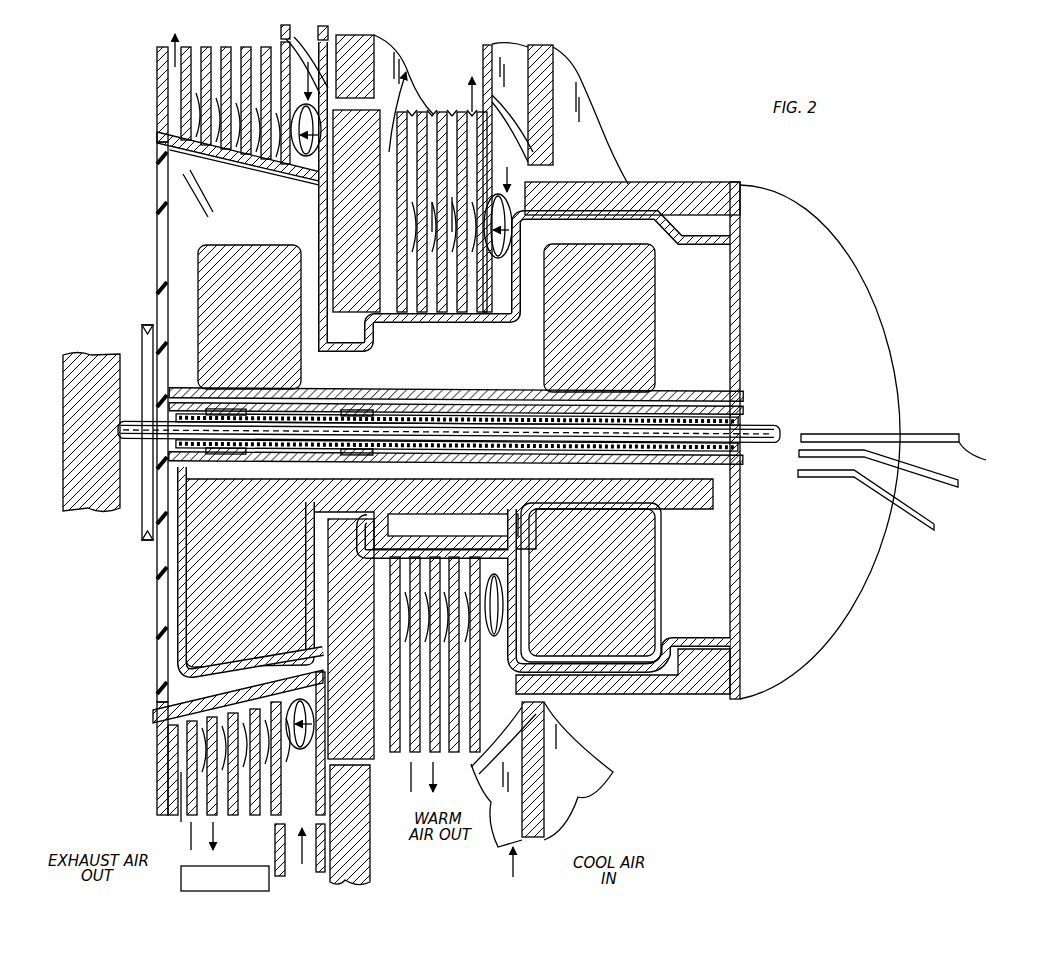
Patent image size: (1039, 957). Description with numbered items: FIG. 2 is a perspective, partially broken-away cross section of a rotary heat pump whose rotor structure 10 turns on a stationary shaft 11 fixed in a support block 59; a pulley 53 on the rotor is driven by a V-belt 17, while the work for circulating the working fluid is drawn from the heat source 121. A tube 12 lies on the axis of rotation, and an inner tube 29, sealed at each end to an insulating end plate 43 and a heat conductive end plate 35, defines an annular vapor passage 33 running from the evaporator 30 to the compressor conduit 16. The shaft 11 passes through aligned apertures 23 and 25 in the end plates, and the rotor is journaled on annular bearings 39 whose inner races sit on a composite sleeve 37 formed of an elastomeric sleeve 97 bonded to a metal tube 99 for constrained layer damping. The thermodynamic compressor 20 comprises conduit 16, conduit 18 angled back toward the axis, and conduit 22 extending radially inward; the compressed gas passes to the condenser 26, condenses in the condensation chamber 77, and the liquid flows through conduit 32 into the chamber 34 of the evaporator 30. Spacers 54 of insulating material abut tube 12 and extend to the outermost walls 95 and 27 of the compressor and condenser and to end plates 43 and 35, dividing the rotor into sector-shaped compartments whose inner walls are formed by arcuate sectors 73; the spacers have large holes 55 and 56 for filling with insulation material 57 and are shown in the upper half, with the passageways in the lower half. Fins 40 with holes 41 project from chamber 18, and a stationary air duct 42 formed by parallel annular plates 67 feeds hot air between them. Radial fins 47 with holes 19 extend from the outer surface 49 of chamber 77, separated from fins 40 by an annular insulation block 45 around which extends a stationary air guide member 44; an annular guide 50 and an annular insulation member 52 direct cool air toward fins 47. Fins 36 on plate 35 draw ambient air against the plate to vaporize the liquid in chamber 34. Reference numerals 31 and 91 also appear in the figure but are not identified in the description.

The rotor structure 10 is at (872, 212).
The shaft 11 is at (784, 426).
The tube 12 is at (323, 394).
The conduit 16 is at (157, 602).
The V-belt 17 is at (158, 316).
The conduit 18 is at (180, 696).
The holes 19 is at (503, 638).
The thermodynamic compressor 20 is at (155, 656).
The conduit 22 is at (315, 584).
The aperture 23 is at (190, 402).
The aperture 25 is at (750, 414).
The condenser 26 is at (545, 514).
The outermost wall 27 is at (401, 544).
The tube 29 is at (350, 408).
The evaporator 30 is at (647, 584).
The bottom plate 31 is at (648, 696).
The longitudinally extending conduit 32 is at (585, 694).
The annular vapor passage 33 is at (417, 394).
The evaporation chamber 34 is at (717, 606).
The end plate 35 is at (745, 701).
The fins 36 is at (967, 452).
The composite sleeve 37 is at (775, 424).
The annular bearings 39 is at (743, 456).
The fins 40 is at (263, 812).
The holes 41 is at (299, 744).
The stationary air duct 42 is at (267, 466).
The insulating end plate 43 is at (168, 212).
The stationary air guide member 44 is at (373, 866).
The annular block of insulation material 45 is at (359, 695).
The radial fins 47 is at (432, 114).
The outer surface 49 is at (383, 581).
The annular guide 50 is at (514, 852).
The annular insulation member 52 is at (583, 796).
The pulley 53 is at (141, 338).
The spacers 54 is at (718, 276).
The holes 55 is at (657, 320).
The holes 56 is at (263, 250).
The insulation material 57 is at (643, 360).
The support block 59 is at (105, 362).
The annular plates 67 is at (304, 864).
The arcuate sectors 73 is at (235, 656).
The condensation chamber 77 is at (513, 531).
The warm air outlet 91 is at (380, 760).
The outermost wall 95 is at (220, 688).
The elastomeric sleeve 97 is at (779, 448).
The metal tube 99 is at (771, 460).
The heat source 121 is at (180, 879).